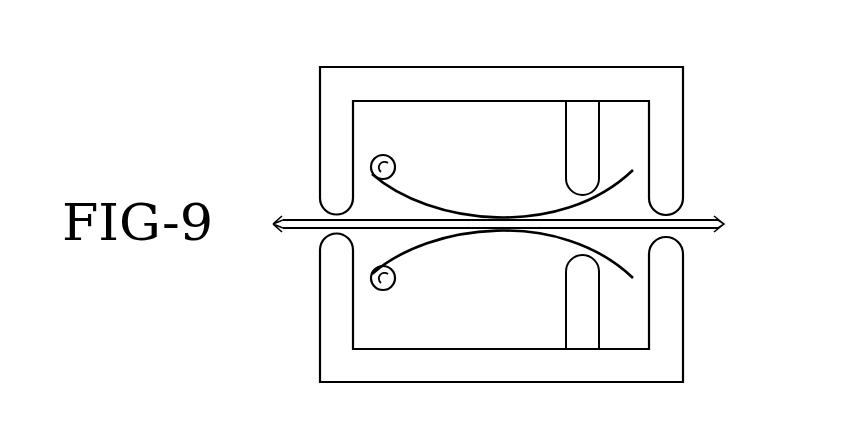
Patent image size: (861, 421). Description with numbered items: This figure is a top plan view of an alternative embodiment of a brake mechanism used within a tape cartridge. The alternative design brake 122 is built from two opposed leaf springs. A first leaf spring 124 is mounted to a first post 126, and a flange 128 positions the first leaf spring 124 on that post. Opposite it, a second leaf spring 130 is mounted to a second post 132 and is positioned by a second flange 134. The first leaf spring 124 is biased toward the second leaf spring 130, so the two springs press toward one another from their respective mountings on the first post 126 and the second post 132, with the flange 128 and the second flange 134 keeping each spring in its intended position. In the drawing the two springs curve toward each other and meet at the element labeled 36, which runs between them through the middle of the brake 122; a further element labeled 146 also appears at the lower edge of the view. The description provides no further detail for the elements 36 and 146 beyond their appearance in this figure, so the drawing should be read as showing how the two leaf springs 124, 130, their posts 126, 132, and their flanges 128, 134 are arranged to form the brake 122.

The sheet of paper 36 is at (695, 225).
The brake 122 is at (406, 222).
The first leaf spring 124 is at (408, 197).
The first post 126 is at (372, 163).
The flange 128 is at (565, 162).
The second leaf spring 130 is at (410, 248).
The second post 132 is at (372, 282).
The second flange 134 is at (565, 298).
The feed direction reference 146 is at (235, 417).